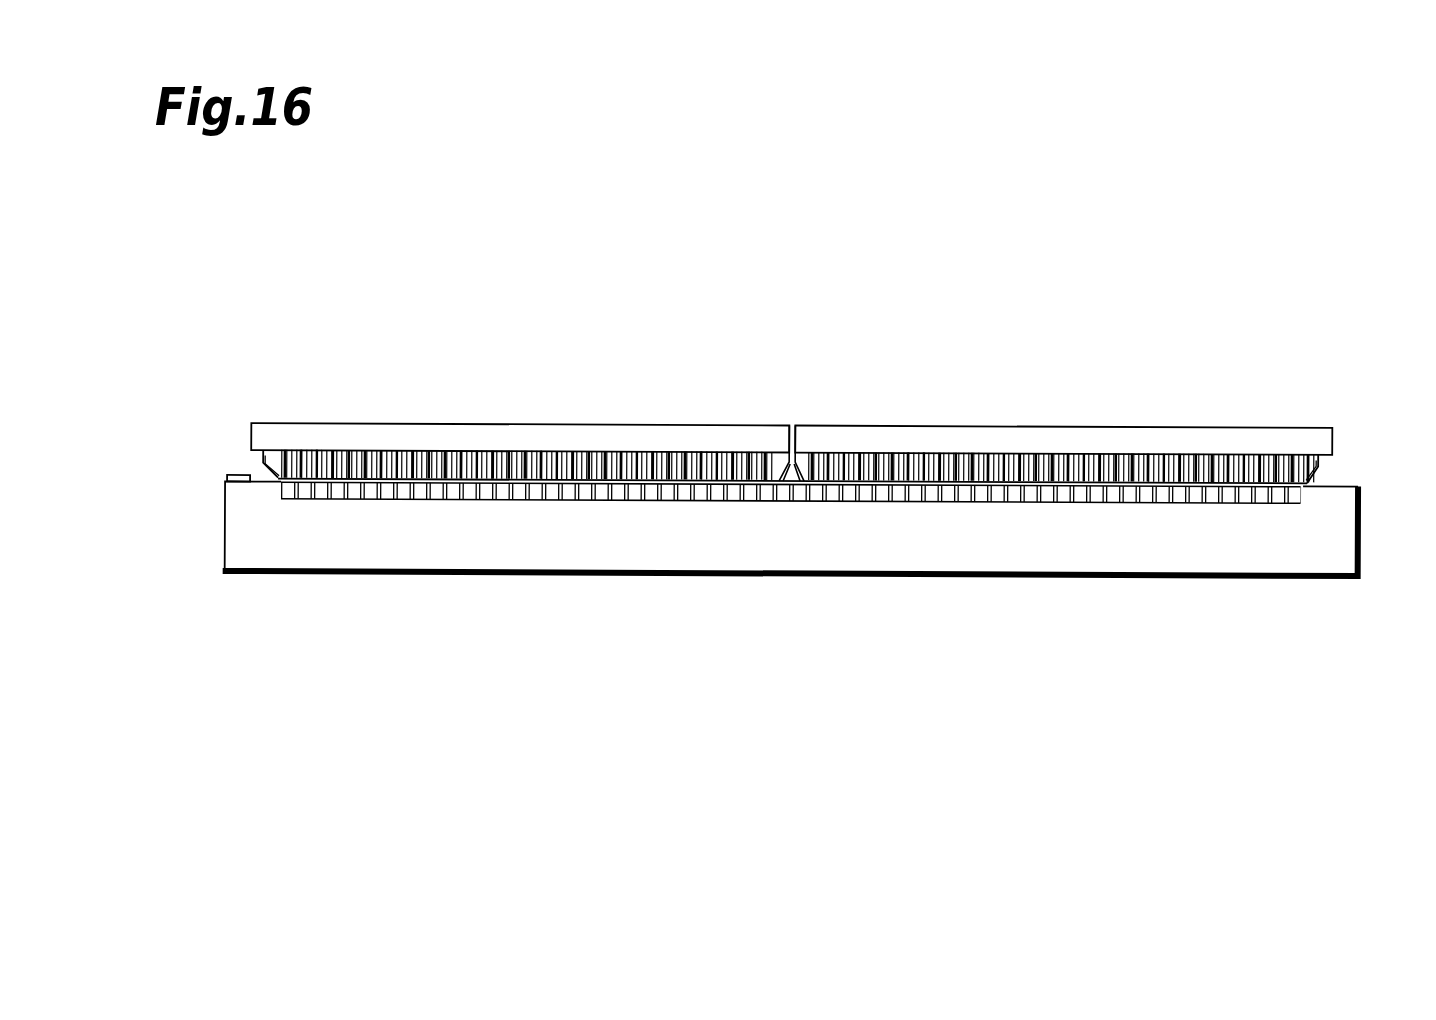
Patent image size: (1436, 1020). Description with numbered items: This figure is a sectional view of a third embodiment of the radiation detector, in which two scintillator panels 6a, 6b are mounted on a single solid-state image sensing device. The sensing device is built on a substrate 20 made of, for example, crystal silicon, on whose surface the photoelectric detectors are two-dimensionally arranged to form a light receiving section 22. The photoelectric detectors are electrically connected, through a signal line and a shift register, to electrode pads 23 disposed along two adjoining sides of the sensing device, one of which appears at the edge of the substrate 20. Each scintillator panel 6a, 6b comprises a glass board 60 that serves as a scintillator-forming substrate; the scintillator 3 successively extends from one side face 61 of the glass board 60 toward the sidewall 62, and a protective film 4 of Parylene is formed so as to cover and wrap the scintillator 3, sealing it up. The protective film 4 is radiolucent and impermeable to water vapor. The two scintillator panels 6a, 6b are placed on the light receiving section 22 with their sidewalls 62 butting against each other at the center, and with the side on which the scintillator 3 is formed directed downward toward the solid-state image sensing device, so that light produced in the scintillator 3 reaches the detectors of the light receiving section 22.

The substrate 20 is at (1307, 557).
The light receiving section 22 is at (1022, 495).
The electrode pad 23 is at (240, 477).
The scintillator 3 is at (420, 450).
The protective film 4 is at (317, 462).
The glass board 60 is at (824, 381).
The scintillator panel 6a is at (543, 425).
The scintillator panel 6b is at (1052, 427).
The side face 61 is at (648, 450).
The sidewall 62 is at (792, 427).